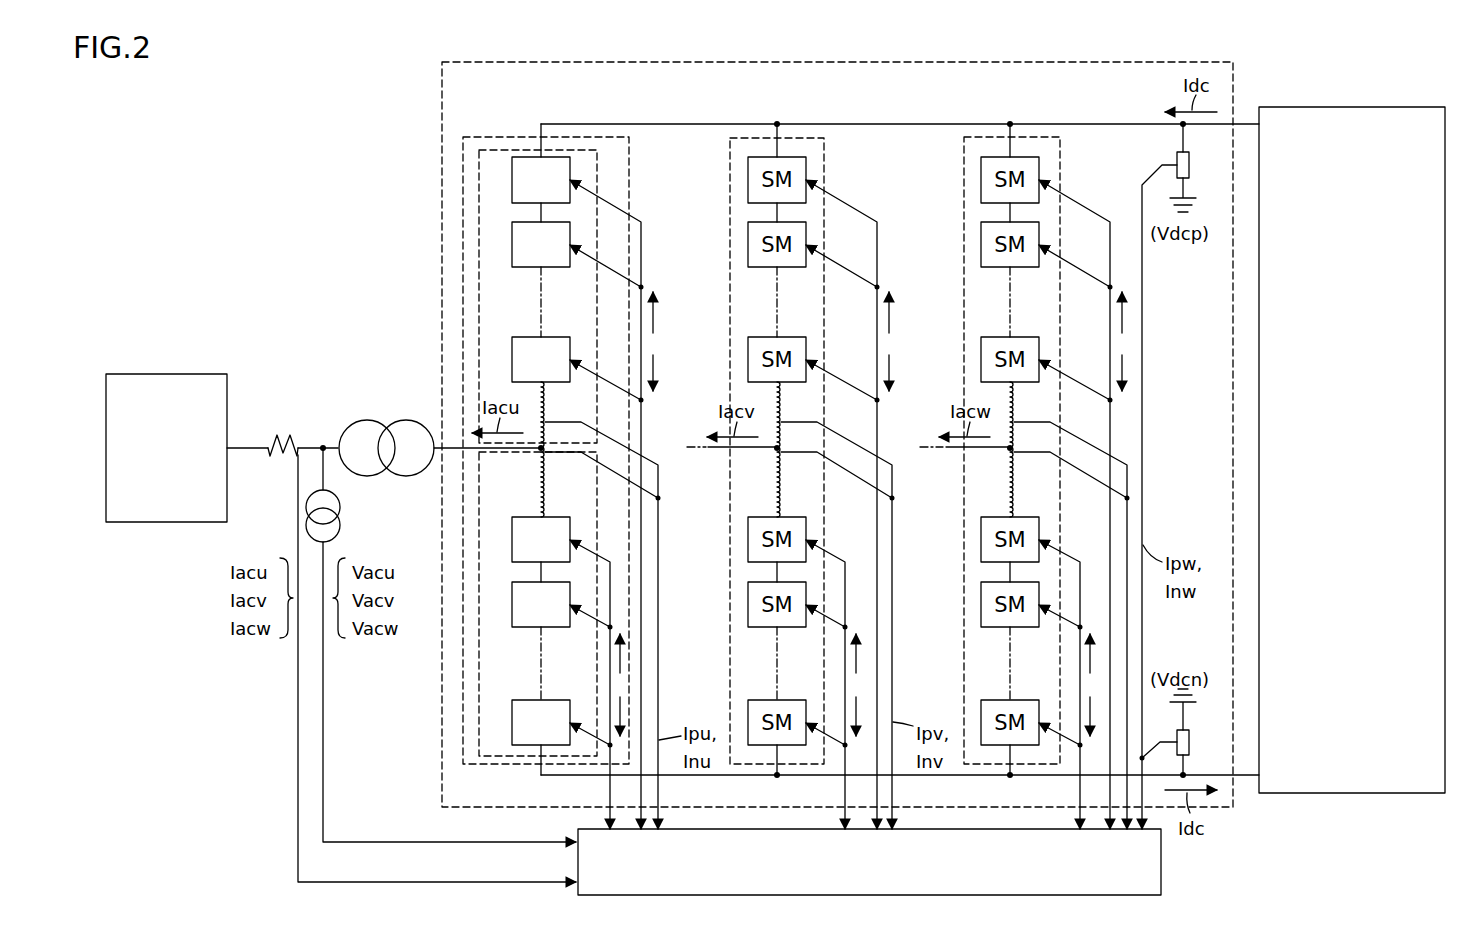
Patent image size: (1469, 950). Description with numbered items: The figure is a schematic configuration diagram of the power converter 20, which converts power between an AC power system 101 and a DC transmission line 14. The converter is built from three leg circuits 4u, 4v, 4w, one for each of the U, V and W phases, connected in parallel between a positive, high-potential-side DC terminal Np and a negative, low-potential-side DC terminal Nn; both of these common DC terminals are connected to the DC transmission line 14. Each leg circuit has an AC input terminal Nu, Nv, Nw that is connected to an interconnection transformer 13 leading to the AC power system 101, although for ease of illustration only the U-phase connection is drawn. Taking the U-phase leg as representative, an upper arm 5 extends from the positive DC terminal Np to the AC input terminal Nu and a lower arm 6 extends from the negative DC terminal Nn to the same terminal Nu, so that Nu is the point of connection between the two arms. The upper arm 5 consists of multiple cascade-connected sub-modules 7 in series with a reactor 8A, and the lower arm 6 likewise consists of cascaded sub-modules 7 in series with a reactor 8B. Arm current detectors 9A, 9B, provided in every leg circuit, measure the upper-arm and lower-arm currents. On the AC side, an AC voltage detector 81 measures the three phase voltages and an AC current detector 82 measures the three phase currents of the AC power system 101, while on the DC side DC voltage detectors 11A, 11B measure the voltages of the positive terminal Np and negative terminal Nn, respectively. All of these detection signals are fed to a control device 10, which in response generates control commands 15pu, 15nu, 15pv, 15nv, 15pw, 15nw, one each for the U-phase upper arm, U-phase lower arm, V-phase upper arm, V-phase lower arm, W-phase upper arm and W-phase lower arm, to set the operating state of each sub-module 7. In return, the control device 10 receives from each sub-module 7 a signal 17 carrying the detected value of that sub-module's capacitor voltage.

The power converter 20 is at (442, 108).
The AC power system 101 is at (168, 374).
The AC current detector 82 is at (278, 434).
The interconnection transformer 13 is at (362, 424).
The AC voltage detector 81 is at (342, 508).
The leg circuit 4u is at (483, 137).
The leg circuit 4v is at (807, 138).
The leg circuit 4w is at (1040, 137).
The upper arm 5 is at (479, 287).
The lower arm 6 is at (479, 657).
The sub-module 7 is at (512, 181).
The reactor 8A is at (548, 402).
The reactor 8B is at (548, 498).
The arm current detector 9A is at (548, 435).
The arm current detector 9B is at (548, 468).
The signal 17 is at (656, 378).
The control command 15pu is at (656, 320).
The control command 15pv is at (892, 320).
The control command 15pw is at (1125, 320).
The control command 15nu is at (624, 655).
The control command 15nv is at (860, 655).
The control command 15nw is at (1094, 658).
The DC voltage detector 11A is at (1189, 166).
The DC voltage detector 11B is at (1189, 742).
The DC transmission line 14 is at (1350, 107).
The control device 10 is at (1161, 865).
The positive DC terminal Np is at (775, 122).
The negative DC terminal Nn is at (775, 777).
The AC input terminal Nu is at (540, 452).
The AC input terminal Nv is at (775, 450).
The AC input terminal Nw is at (1008, 450).